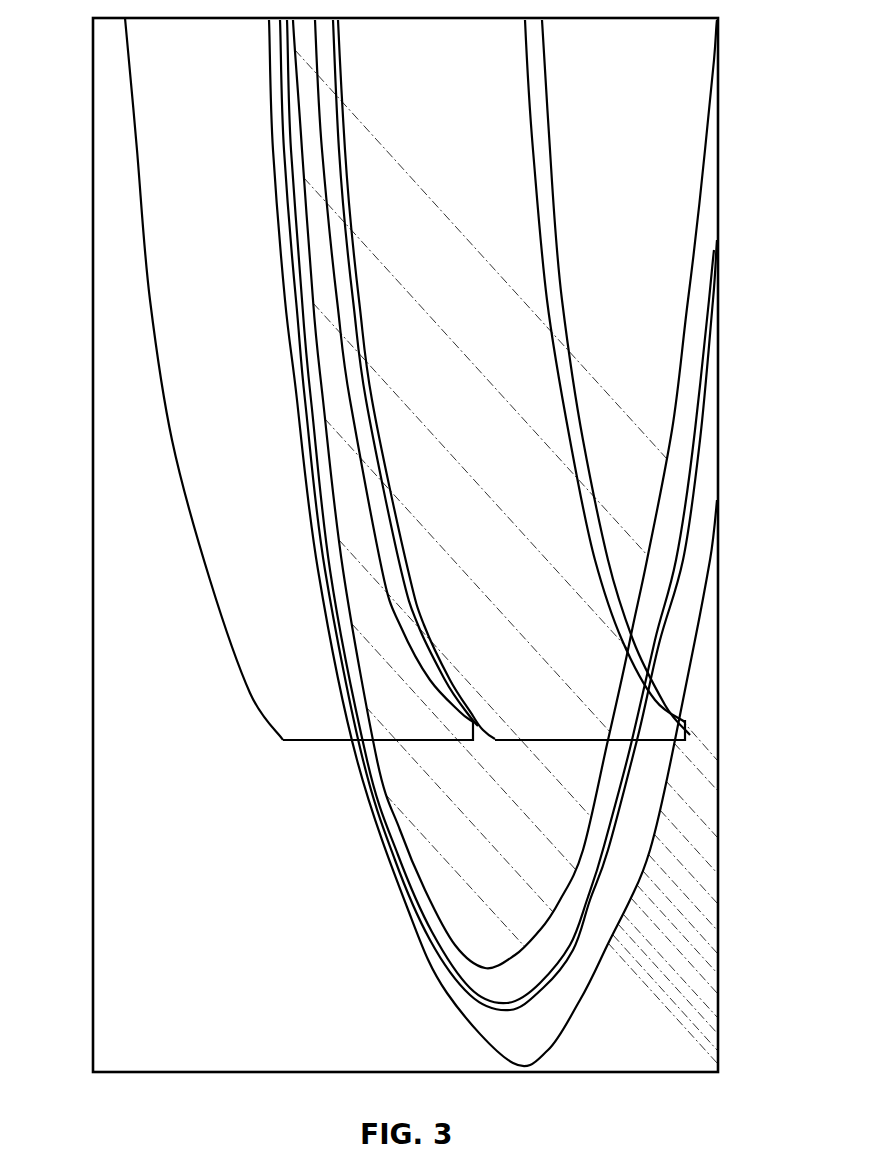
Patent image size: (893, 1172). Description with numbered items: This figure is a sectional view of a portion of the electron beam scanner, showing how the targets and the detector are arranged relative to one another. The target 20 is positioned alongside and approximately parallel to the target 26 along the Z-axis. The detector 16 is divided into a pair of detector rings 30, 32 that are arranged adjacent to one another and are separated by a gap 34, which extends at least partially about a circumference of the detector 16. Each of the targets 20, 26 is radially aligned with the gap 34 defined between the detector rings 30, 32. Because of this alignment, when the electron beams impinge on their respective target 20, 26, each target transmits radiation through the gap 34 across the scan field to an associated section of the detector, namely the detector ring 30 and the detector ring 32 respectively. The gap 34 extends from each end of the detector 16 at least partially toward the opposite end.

The detector 16 is at (552, 272).
The target 20 is at (613, 913).
The target 26 is at (596, 851).
The detector ring 30 is at (497, 197).
The detector ring 32 is at (153, 247).
The gap 34 is at (398, 552).